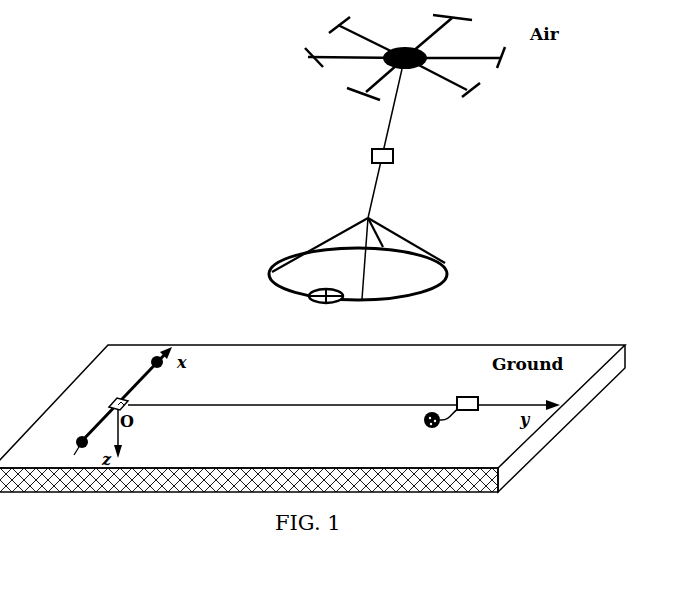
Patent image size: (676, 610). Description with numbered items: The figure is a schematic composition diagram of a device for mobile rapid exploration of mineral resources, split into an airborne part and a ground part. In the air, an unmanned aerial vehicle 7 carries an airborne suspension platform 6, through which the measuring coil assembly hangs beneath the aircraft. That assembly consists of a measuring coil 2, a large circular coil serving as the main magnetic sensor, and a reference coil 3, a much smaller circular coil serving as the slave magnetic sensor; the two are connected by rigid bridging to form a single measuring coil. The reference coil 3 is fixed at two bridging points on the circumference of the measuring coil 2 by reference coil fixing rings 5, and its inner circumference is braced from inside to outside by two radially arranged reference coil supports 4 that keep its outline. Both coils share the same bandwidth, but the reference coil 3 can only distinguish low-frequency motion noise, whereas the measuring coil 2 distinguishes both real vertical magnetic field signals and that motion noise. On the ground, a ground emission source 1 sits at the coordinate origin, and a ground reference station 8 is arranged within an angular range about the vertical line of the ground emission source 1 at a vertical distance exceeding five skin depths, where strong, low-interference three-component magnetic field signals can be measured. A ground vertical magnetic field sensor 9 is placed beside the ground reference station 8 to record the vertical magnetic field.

The ground emission source 1 is at (123, 407).
The measuring coil 2 is at (448, 265).
The reference coil 3 is at (308, 297).
The reference coil supports 4 is at (337, 288).
The reference coil fixing rings 5 is at (332, 302).
The airborne suspension platform 6 is at (393, 157).
The unmanned aerial vehicle 7 is at (483, 70).
The ground reference station 8 is at (470, 400).
The ground vertical magnetic field sensor 9 is at (423, 422).